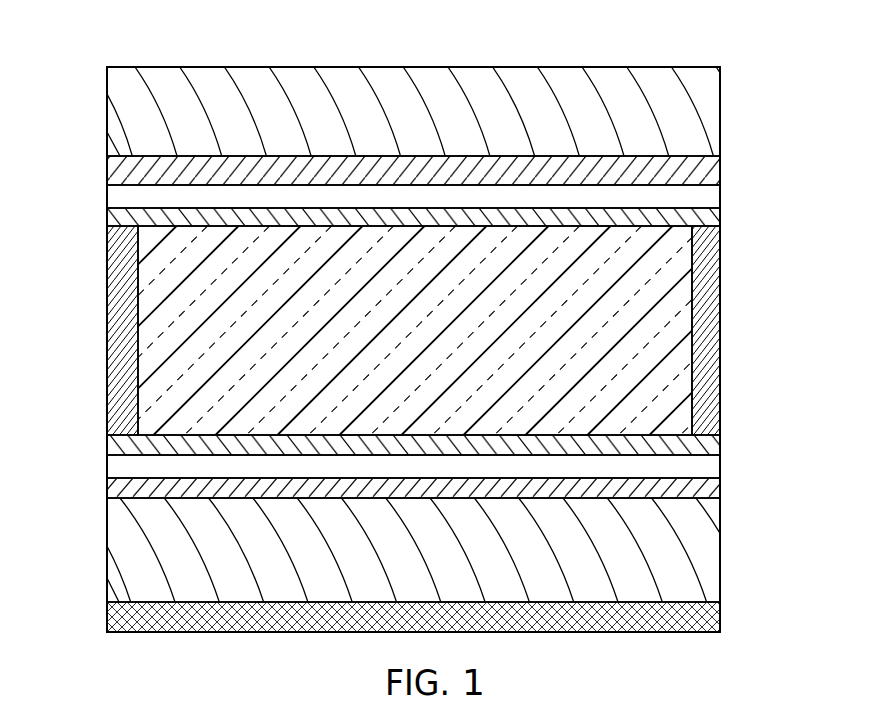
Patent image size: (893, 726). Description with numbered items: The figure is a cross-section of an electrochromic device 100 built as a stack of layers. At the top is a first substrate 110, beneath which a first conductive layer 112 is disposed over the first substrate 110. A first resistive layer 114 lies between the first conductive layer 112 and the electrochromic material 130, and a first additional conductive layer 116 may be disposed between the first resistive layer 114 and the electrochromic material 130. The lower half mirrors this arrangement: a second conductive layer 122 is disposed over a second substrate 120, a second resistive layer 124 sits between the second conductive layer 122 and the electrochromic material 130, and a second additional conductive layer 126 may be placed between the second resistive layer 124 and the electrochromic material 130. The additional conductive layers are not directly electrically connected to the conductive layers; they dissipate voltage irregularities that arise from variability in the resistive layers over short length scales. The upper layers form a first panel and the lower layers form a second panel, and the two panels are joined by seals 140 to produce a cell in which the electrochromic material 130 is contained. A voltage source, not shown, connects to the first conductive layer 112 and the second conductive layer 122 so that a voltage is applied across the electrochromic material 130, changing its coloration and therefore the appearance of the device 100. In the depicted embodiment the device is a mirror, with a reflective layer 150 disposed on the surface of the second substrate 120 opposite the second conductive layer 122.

The electrochromic device 100 is at (99, 38).
The first substrate 110 is at (713, 101).
The first conductive layer 112 is at (112, 172).
The first resistive layer 114 is at (713, 198).
The first additional conductive layer 116 is at (112, 214).
The second substrate 120 is at (713, 548).
The second conductive layer 122 is at (112, 486).
The second resistive layer 124 is at (713, 470).
The second additional conductive layer 126 is at (112, 443).
The electrochromic material 130 is at (676, 268).
The seals 140 is at (122, 336).
The reflective layer 150 is at (713, 620).